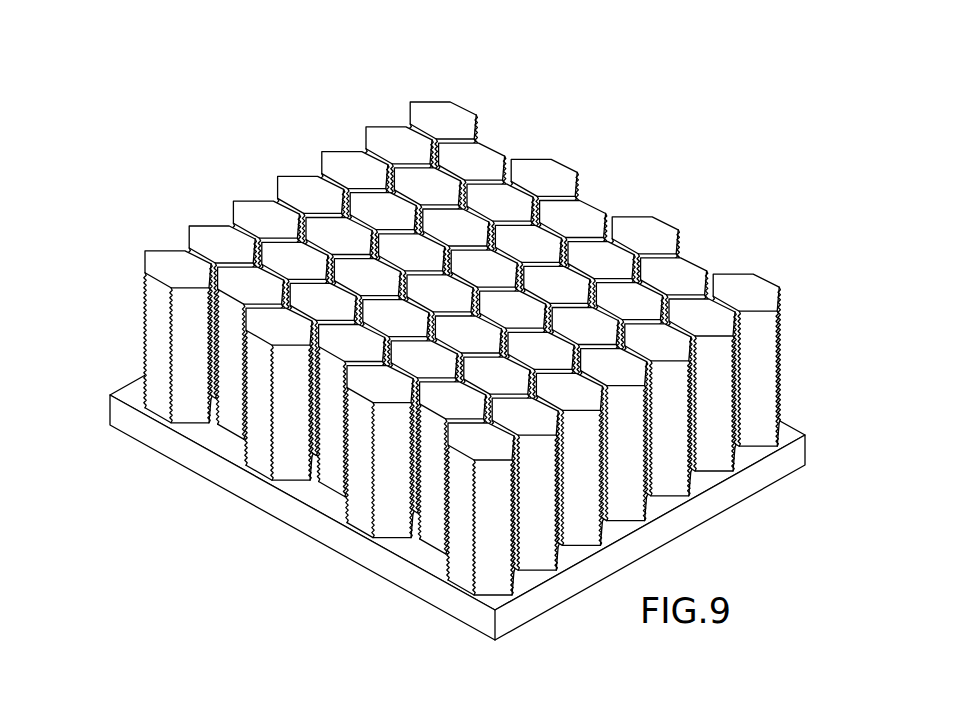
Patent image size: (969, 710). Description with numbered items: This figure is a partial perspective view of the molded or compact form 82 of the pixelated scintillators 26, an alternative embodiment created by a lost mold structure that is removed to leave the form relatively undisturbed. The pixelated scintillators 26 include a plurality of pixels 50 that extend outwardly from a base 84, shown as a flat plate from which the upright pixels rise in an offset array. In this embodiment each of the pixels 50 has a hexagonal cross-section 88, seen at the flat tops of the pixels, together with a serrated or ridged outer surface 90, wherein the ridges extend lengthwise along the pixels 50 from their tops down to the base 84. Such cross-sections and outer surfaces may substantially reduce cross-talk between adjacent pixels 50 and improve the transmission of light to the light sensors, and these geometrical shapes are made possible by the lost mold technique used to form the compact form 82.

The molded or compact form 82 is at (707, 85).
The base 84 is at (120, 411).
The hexagonal cross-section 88 is at (430, 110).
The pixels 50 is at (300, 188).
The pixelated scintillators 26 is at (140, 332).
The serrated or ridged outer surface 90 is at (782, 372).